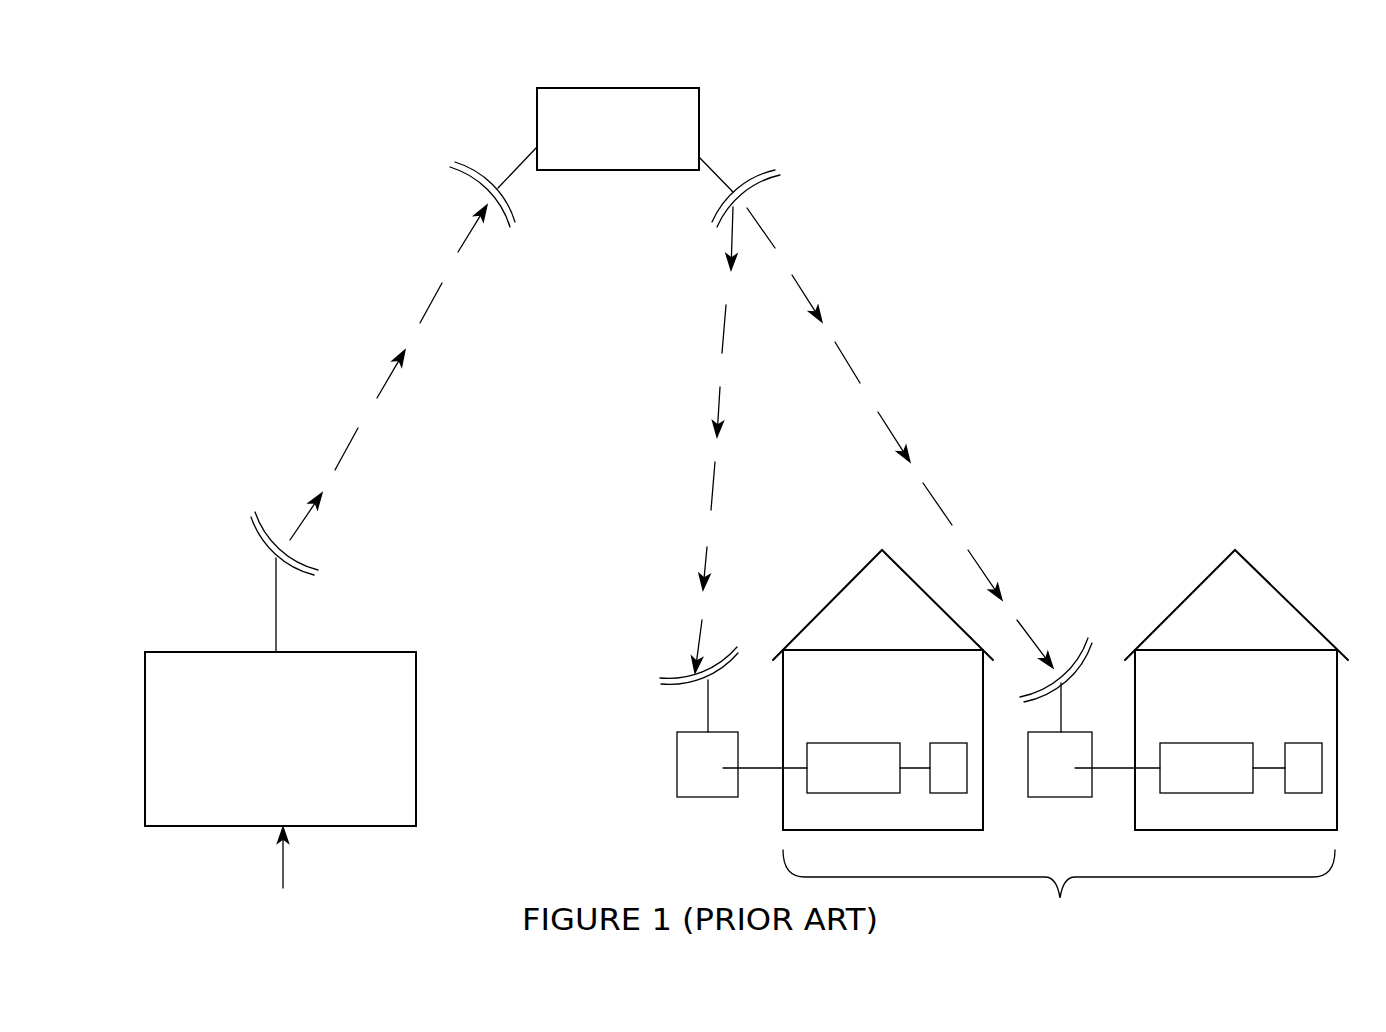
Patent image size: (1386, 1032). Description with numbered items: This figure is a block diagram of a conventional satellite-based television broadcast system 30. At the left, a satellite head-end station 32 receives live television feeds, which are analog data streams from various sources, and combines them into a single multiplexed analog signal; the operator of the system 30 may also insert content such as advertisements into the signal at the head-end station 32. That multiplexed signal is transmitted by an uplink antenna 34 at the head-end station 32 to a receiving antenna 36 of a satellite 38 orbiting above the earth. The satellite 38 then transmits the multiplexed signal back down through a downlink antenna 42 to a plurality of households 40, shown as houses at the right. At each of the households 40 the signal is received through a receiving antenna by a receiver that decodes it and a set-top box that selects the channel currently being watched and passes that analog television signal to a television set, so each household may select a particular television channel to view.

The satellite-based television broadcast system 30 is at (1056, 312).
The satellite head-end station 32 is at (212, 652).
The uplink antenna 34 is at (260, 540).
The receiving antenna 36 is at (450, 175).
The satellite 38 is at (660, 170).
The households 40 is at (1059, 894).
The downlink antenna 42 is at (717, 236).